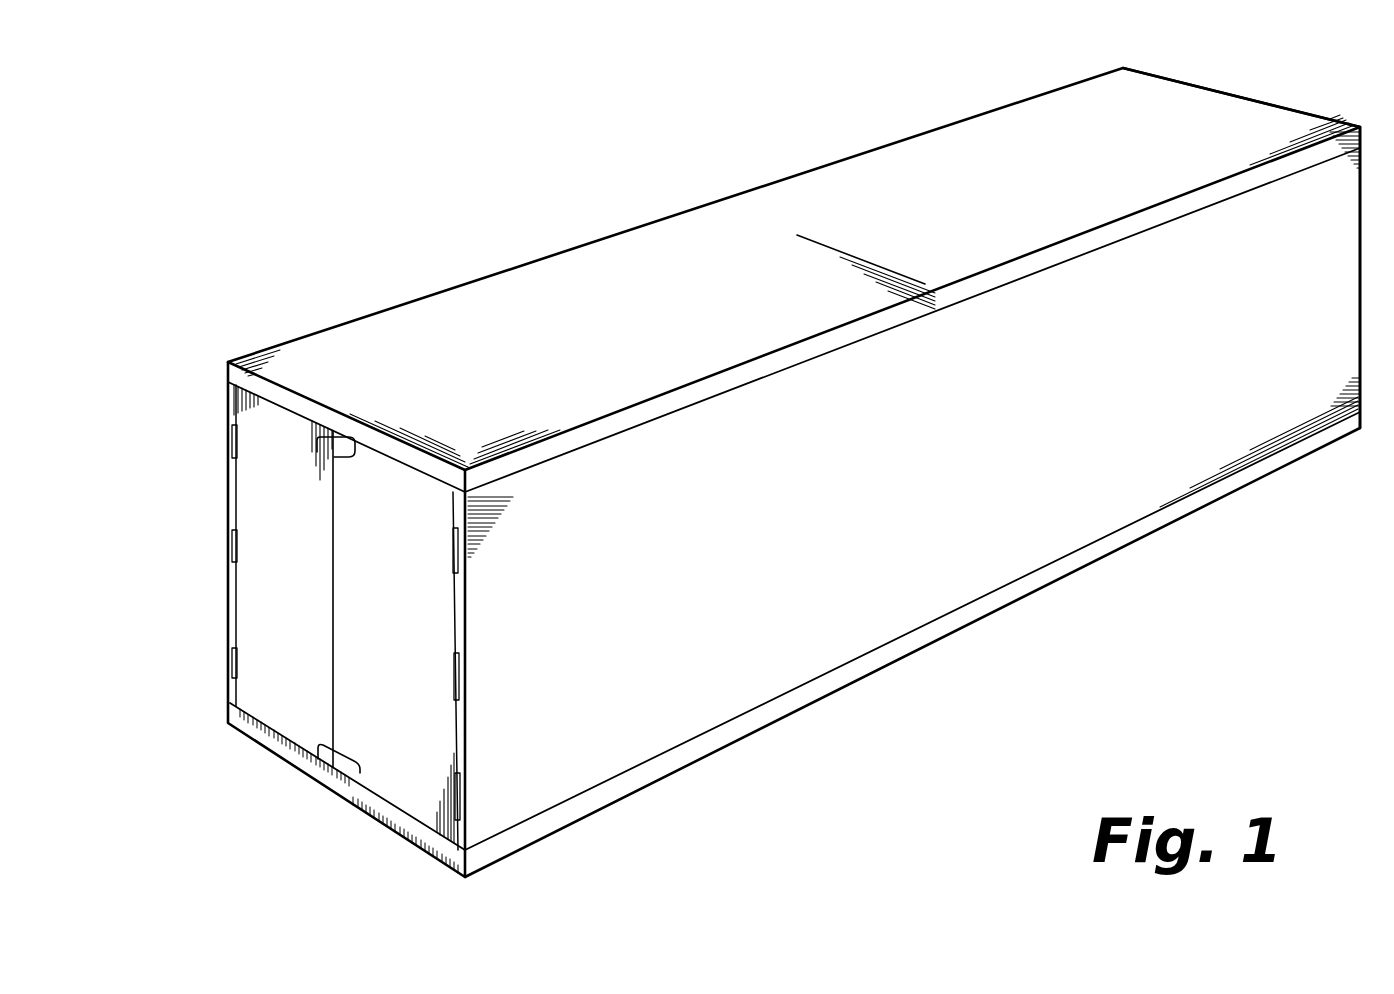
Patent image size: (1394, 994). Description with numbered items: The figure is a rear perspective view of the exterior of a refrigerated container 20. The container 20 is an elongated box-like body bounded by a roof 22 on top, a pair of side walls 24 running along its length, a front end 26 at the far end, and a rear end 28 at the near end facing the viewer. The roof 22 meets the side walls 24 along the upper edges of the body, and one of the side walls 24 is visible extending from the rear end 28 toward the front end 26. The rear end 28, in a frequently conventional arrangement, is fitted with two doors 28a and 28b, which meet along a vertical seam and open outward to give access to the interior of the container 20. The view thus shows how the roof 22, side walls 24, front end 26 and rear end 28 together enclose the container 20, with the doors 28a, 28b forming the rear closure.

The container 20 is at (558, 210).
The roof 22 is at (872, 178).
The side walls 24 is at (962, 578).
The front end 26 is at (1268, 141).
The rear end 28 is at (260, 507).
The door 28a is at (292, 704).
The door 28b is at (418, 793).